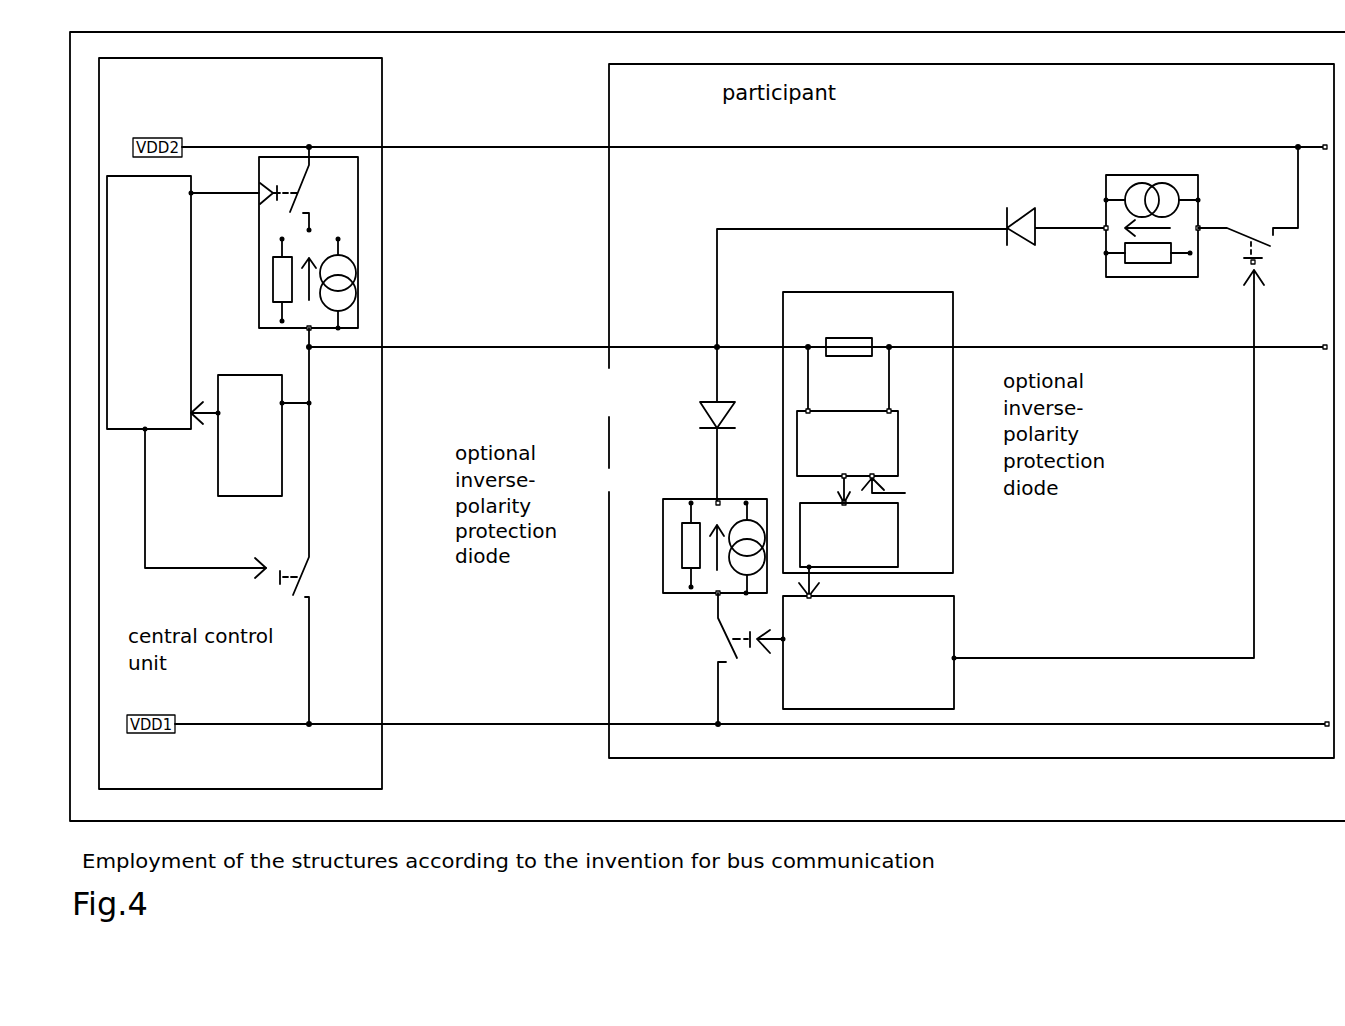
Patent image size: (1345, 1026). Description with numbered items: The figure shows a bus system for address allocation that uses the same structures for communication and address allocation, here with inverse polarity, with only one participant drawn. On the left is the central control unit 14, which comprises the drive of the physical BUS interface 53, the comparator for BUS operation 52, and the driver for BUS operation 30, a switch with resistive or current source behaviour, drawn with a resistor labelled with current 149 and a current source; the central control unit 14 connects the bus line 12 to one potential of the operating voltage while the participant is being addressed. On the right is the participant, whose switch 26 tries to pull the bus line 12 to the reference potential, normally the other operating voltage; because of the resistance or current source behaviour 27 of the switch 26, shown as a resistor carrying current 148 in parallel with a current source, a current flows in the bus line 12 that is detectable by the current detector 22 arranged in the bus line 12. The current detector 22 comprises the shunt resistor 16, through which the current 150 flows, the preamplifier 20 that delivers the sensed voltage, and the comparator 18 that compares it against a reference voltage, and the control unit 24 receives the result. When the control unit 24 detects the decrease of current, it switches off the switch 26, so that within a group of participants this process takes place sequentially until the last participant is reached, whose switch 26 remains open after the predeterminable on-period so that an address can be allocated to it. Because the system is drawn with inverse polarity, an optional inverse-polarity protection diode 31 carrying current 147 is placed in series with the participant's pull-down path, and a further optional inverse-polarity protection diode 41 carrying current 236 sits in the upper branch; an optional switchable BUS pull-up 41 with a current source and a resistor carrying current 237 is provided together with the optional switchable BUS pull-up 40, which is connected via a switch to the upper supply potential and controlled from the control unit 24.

The bus line 12 is at (816, 372).
The central control unit 14 is at (705, 426).
The shunt resistor 16 is at (848, 352).
The comparator 18 is at (848, 549).
The preamplifier 20 is at (847, 442).
The current detector 22 is at (868, 444).
The control unit 24 is at (1023, 489).
The switch of each participant for impressing a measuring current 26 is at (709, 658).
The resistance or current source behaviour of switch 27 is at (690, 547).
The driver for BUS operation 30 is at (286, 247).
The inverse-polarity protection diode 31 is at (643, 425).
The switchable BUS pull-up 40 is at (1248, 202).
The switchable BUS pull-up / inverse-polarity protection diode 41 is at (1099, 272).
The comparator for BUS operation 52 is at (251, 435).
The drive of the physical BUS interface 53 is at (186, 372).
The current I_ 147 is at (708, 425).
The current I_ 148 is at (681, 546).
The current I_ 149 is at (273, 280).
The current I_ 150 is at (848, 374).
The current I_ 236 is at (1056, 218).
The current I_ 237 is at (1148, 263).